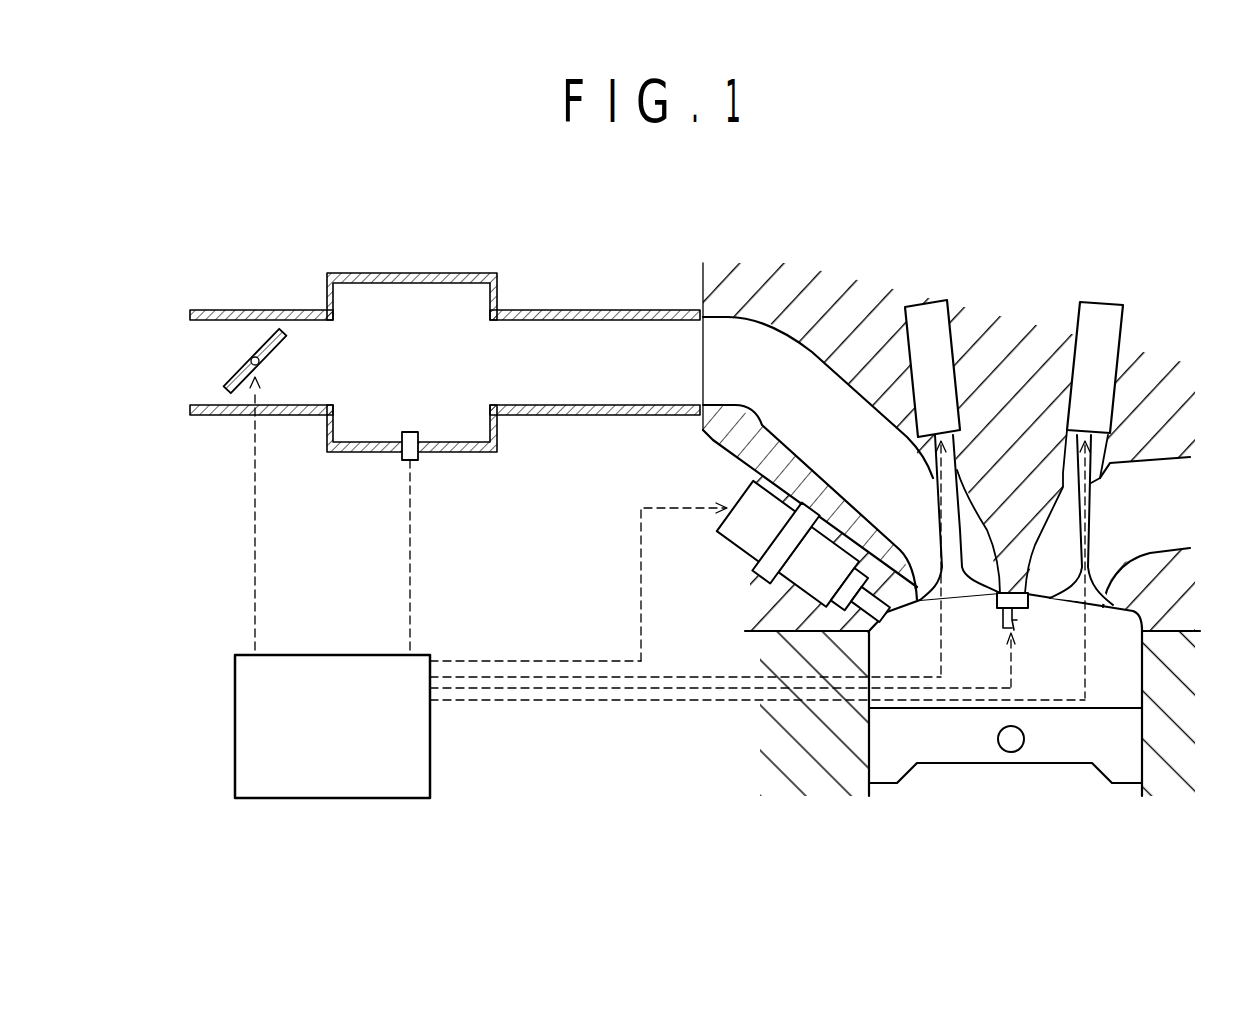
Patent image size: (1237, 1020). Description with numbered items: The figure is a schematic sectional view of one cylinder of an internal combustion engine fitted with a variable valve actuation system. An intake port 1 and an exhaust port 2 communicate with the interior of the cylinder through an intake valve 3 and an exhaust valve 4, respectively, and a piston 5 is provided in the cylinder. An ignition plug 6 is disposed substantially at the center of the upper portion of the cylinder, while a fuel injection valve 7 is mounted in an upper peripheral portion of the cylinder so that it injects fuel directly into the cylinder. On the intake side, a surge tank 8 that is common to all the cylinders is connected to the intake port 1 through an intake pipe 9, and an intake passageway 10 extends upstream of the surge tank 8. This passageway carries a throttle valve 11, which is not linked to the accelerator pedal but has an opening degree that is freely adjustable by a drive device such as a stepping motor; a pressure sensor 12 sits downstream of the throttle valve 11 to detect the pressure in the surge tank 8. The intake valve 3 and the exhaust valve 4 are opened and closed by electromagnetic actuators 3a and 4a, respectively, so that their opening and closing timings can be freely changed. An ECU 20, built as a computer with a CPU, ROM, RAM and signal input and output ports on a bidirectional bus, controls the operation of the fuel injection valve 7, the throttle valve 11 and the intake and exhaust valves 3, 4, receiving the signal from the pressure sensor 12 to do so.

The intake port 1 is at (780, 363).
The exhaust port 2 is at (1152, 470).
The intake valve 3 is at (960, 437).
The electromagnetic actuator 3a is at (920, 310).
The exhaust valve 4 is at (1070, 445).
The electromagnetic actuator 4a is at (1100, 312).
The piston 5 is at (1060, 748).
The ignition plug 6 is at (1011, 593).
The fuel injection valve 7 is at (800, 567).
The surge tank 8 is at (422, 273).
The intake pipe 9 is at (592, 310).
The intake passageway 10 is at (248, 312).
The throttle valve 11 is at (243, 385).
The pressure sensor 12 is at (417, 462).
The ECU 20 is at (660, 726).